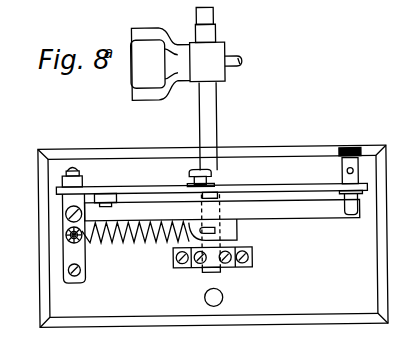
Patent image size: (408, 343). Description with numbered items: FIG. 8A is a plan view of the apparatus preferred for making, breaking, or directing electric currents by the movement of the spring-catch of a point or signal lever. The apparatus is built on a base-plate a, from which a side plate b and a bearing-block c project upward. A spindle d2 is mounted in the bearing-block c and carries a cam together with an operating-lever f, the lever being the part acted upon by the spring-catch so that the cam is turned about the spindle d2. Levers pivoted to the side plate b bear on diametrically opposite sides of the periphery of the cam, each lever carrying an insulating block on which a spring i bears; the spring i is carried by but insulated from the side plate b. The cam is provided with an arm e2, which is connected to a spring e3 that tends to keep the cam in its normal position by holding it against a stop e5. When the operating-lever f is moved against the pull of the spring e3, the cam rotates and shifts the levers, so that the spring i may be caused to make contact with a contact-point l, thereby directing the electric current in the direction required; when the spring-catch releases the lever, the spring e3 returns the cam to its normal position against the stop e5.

The base-plate a is at (213, 236).
The side plate b is at (272, 193).
The bearing-block c is at (212, 260).
The spindle d2 is at (218, 123).
The arm e2 is at (215, 232).
The spring e3 is at (125, 238).
The stop e5 is at (197, 191).
The operating-lever f is at (186, 63).
The spring i is at (222, 211).
The contact-point l is at (352, 214).